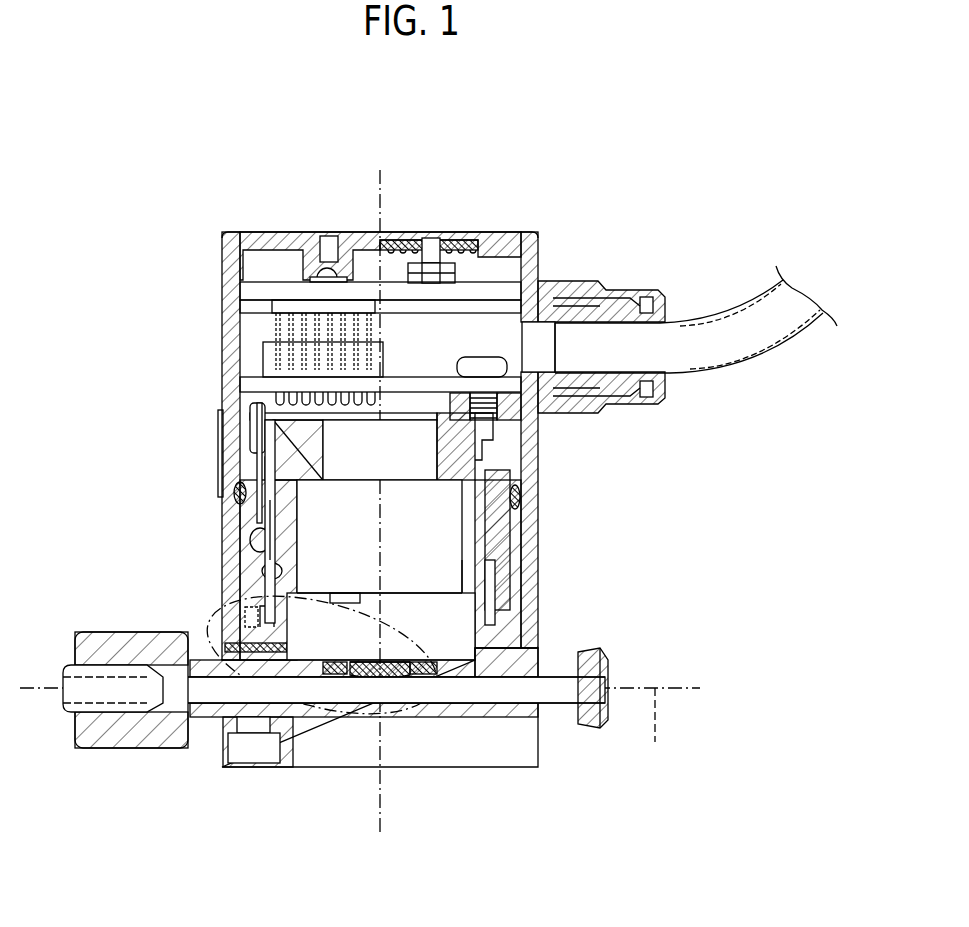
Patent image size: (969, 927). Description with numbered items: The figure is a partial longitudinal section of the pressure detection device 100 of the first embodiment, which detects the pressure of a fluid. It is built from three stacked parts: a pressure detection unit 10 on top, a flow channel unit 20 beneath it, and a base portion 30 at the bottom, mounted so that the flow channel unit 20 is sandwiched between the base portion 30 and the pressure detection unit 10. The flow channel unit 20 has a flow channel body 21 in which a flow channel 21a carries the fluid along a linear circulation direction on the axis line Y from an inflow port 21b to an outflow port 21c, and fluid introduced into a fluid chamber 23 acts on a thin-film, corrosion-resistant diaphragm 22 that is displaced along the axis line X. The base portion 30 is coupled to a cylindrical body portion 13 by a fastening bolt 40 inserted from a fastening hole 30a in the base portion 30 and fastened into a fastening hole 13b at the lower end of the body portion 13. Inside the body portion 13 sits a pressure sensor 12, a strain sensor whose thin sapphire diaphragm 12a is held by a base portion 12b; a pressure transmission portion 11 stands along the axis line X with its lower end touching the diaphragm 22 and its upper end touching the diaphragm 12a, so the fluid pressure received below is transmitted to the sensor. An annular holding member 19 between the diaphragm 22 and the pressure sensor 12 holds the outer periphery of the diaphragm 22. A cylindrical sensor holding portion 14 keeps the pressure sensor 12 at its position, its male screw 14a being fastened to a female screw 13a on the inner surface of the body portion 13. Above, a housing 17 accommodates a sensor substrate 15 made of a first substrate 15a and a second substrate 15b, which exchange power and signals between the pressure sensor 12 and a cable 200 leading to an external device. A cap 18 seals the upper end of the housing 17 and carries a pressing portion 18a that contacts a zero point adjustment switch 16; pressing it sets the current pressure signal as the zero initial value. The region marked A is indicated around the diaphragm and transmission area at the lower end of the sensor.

The pressure detection device 100 is at (618, 168).
The pressure detection unit 10 is at (467, 407).
The pressure transmission portion 11 is at (397, 620).
The pressure sensor 12 is at (431, 570).
The diaphragm 12a is at (375, 620).
The base portion 12b is at (440, 598).
The body portion 13 is at (385, 446).
The female screw 13a is at (300, 565).
The fastening hole 13b is at (300, 617).
The sensor holding portion 14 is at (330, 513).
The male screw 14a is at (270, 528).
The sensor substrate 15 is at (309, 348).
The first substrate 15a is at (240, 380).
The second substrate 15b is at (240, 292).
The zero point adjustment switch 16 is at (437, 262).
The housing 17 is at (540, 432).
The cap 18 is at (344, 219).
The pressing portion 18a is at (430, 245).
The holding member 19 is at (330, 620).
The flow channel unit 20 is at (380, 710).
The flow channel body 21 is at (367, 679).
The flow channel 21a is at (503, 697).
The inflow port 21b is at (612, 668).
The outflow port 21c is at (63, 672).
The diaphragm 22 is at (436, 690).
The fluid chamber 23 is at (358, 690).
The base portion 30 is at (364, 710).
The fastening hole 30a is at (262, 748).
The fastening bolt 40 is at (268, 760).
The cable 200 is at (758, 358).
The region A is at (395, 690).
The axis line X is at (380, 826).
The axis line Y is at (656, 729).